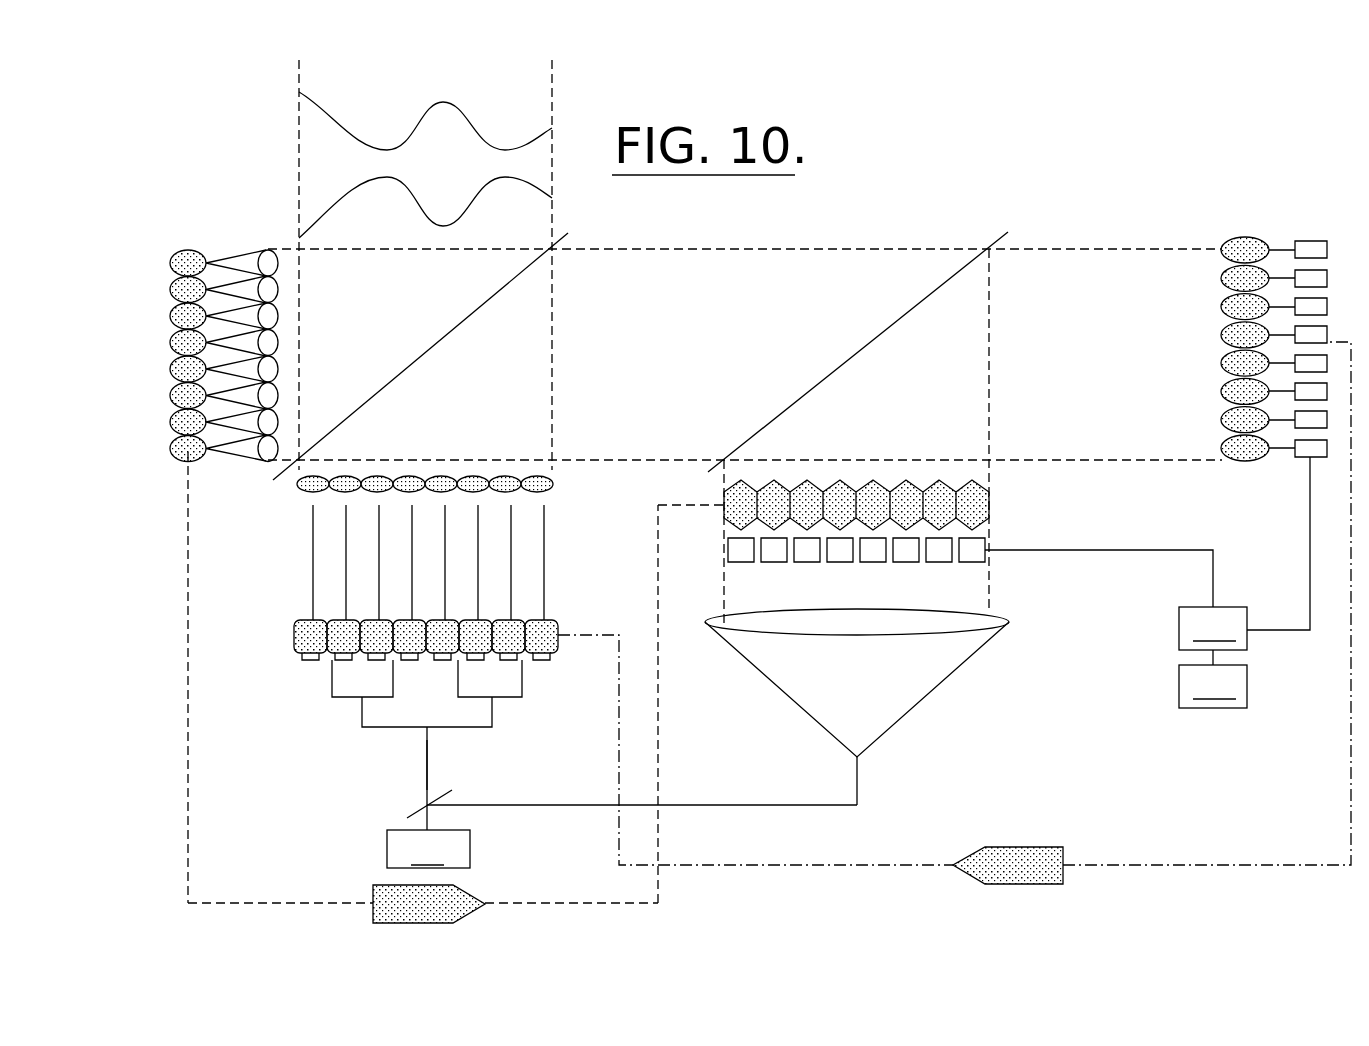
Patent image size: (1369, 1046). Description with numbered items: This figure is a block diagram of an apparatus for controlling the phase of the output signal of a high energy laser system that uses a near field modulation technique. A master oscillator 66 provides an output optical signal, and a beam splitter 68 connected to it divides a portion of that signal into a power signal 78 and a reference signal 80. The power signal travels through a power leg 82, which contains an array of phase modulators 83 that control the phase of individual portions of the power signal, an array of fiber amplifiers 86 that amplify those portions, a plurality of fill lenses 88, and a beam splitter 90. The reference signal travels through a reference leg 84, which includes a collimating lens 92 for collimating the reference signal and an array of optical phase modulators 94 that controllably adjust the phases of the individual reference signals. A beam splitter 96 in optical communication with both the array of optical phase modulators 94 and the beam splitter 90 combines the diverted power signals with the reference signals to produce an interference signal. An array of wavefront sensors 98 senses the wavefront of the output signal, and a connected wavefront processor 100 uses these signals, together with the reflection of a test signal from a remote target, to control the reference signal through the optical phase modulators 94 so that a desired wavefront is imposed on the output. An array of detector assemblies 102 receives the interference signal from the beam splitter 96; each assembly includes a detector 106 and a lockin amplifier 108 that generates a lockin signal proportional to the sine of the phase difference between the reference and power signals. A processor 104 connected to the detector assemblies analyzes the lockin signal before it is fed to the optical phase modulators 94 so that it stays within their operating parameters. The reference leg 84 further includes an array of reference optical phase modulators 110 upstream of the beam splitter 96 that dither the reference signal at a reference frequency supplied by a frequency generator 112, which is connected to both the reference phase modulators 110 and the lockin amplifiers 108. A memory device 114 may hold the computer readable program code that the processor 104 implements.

The master oscillator 66 is at (428, 849).
The beam splitter 68 is at (420, 808).
The power signal 78 is at (432, 765).
The reference signal 80 is at (478, 805).
The power leg 82 is at (334, 723).
The array of phase modulators 83 is at (293, 638).
The reference leg 84 is at (917, 761).
The array of fiber amplifiers 86 is at (305, 573).
The fill lenses 88 is at (297, 495).
The beam splitter 90 is at (267, 482).
The collimating lens 92 is at (1025, 623).
The array of optical phase modulators 94 is at (1033, 507).
The beam splitter 96 is at (963, 233).
The array of wavefront sensors 98 is at (155, 348).
The wavefront processor 100 is at (365, 893).
The array of detector assemblies 102 is at (1257, 314).
The processor 104 is at (1077, 851).
The detector 106 is at (1250, 237).
The lockin amplifier 108 is at (1310, 240).
The array of reference optical phase modulators 110 is at (1000, 558).
The frequency generator 112 is at (1244, 553).
The memory device 114 is at (1213, 679).